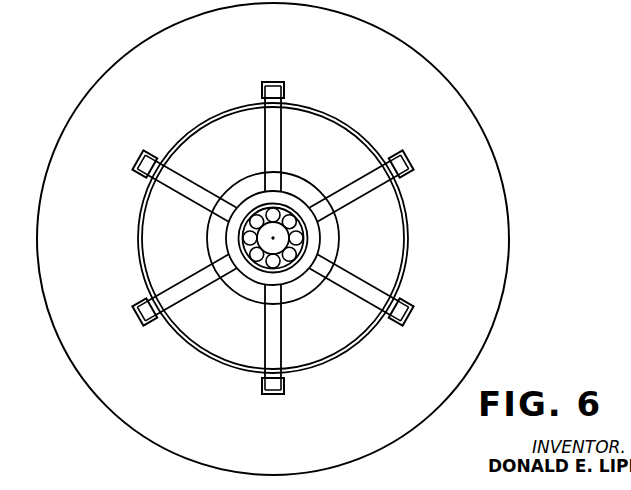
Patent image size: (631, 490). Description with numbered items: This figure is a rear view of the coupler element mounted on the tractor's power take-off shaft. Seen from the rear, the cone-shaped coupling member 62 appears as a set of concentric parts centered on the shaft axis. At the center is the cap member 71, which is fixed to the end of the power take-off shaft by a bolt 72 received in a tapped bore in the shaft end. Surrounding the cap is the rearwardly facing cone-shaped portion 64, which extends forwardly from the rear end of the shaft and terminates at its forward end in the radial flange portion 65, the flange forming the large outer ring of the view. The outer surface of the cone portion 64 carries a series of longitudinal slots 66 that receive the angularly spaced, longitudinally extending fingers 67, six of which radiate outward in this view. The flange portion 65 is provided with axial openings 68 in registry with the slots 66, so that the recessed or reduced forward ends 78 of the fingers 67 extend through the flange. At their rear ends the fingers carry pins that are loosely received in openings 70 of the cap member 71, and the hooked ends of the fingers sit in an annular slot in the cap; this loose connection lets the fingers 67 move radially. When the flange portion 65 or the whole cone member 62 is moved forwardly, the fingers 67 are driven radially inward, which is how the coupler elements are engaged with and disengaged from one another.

The cone-shaped coupling member 62 is at (285, 239).
The cone-shaped portion 64 is at (388, 217).
The radial flange portion 65 is at (497, 198).
The longitudinal slots 66 is at (350, 208).
The fingers 67 is at (277, 152).
The axial openings 68 is at (285, 93).
The openings 70 is at (257, 207).
The cap member 71 is at (295, 202).
The bolt 72 is at (283, 240).
The forward ends 78 is at (275, 87).